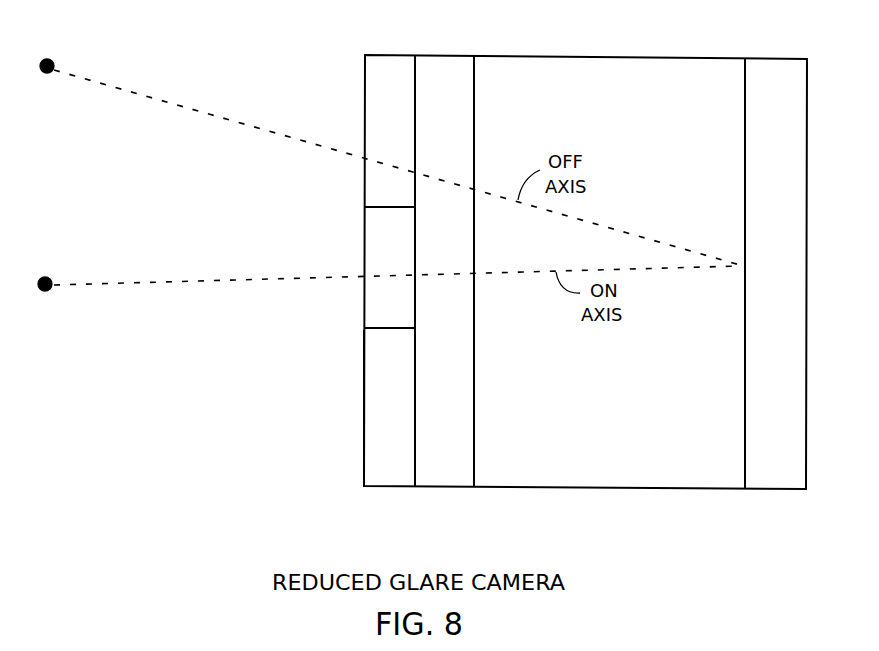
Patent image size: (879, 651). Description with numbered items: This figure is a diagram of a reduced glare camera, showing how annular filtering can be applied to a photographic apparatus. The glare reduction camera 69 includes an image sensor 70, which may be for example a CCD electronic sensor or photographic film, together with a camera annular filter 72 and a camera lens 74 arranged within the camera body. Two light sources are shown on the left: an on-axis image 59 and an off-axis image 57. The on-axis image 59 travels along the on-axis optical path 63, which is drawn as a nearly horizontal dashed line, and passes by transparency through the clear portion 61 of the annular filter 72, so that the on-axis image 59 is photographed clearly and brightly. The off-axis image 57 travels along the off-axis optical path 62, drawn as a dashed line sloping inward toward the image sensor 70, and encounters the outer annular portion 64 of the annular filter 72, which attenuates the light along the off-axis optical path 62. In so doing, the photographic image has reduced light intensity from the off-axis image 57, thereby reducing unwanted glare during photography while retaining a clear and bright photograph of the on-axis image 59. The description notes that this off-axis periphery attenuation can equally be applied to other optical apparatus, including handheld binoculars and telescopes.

The off-axis image 57 is at (51, 60).
The on-axis image 59 is at (43, 292).
The clear portion 61 is at (364, 302).
The off-axis optical path 62 is at (200, 111).
The on-axis optical path 63 is at (195, 283).
The outer annular portion 64 is at (363, 413).
The glare reduction camera 69 is at (806, 440).
The image sensor 70 is at (773, 58).
The camera annular filter 72 is at (380, 489).
The camera lens 74 is at (442, 489).